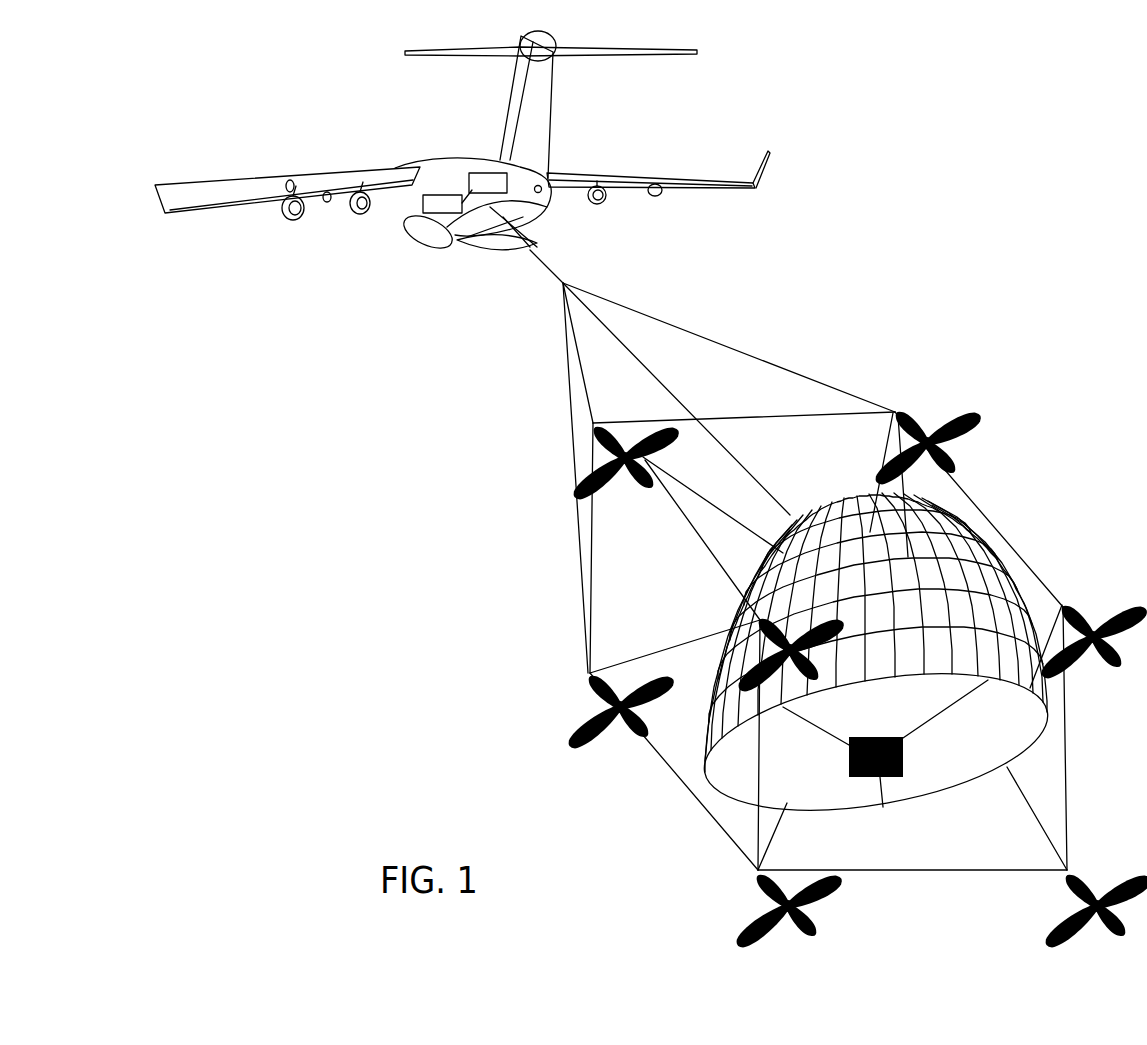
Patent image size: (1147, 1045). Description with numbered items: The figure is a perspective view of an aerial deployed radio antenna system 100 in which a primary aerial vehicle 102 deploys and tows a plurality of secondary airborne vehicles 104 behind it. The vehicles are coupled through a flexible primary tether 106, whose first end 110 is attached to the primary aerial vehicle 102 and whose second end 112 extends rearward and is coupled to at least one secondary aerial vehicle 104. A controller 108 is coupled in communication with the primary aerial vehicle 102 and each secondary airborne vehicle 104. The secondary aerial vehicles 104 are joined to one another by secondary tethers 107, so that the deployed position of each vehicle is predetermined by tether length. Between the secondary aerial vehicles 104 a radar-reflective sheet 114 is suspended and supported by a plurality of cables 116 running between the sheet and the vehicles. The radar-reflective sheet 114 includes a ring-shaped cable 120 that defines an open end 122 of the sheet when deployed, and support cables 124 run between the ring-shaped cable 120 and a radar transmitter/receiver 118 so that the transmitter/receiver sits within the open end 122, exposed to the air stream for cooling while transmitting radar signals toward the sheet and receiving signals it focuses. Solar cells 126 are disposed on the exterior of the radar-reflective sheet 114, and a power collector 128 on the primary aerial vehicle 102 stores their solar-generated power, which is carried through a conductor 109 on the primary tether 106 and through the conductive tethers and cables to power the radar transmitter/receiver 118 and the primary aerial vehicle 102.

The aerial deployed radio antenna system 100 is at (1043, 140).
The primary aerial vehicle 102 is at (337, 155).
The secondary airborne vehicles 104 is at (1046, 402).
The primary tether 106 is at (566, 341).
The secondary tethers 107 is at (768, 416).
The controller 108 is at (423, 210).
The conductor 109 is at (668, 323).
The first end 110 is at (556, 230).
The second end 112 is at (852, 378).
The radar-reflective sheet 114 is at (942, 568).
The cables 116 is at (888, 445).
The radar transmitter/receiver 118 is at (849, 765).
The ring-shaped cable 120 is at (1040, 734).
The open end 122 is at (946, 775).
The support cables 124 is at (947, 708).
The solar cells 126 is at (740, 612).
The power collector 128 is at (487, 183).